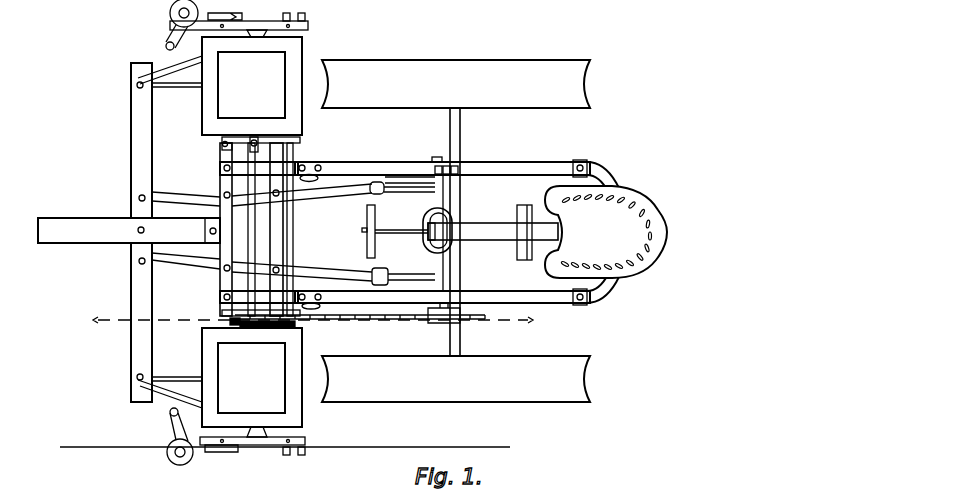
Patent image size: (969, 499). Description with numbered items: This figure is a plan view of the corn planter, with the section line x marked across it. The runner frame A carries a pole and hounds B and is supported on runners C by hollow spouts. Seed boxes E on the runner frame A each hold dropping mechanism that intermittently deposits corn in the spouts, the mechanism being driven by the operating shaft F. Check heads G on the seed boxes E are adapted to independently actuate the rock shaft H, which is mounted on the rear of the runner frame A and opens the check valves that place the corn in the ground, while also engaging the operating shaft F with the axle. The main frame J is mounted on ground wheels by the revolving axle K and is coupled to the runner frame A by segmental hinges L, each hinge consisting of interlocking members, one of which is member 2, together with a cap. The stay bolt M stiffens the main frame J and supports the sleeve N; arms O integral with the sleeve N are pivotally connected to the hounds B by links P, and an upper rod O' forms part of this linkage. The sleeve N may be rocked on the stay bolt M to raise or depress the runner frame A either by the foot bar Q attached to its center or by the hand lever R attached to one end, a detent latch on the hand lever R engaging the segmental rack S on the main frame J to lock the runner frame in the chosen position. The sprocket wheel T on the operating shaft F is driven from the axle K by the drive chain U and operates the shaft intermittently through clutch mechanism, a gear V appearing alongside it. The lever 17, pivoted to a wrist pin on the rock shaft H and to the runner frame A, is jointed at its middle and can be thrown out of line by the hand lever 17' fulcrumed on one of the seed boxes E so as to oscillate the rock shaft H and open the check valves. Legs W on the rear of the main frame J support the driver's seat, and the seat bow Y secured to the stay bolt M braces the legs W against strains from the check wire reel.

The seed boxes E is at (252, 232).
The runners C is at (170, 232).
The check heads G is at (263, 447).
The runner frame A is at (220, 285).
The operating shaft F is at (256, 229).
The rock shaft H is at (290, 229).
The lever 17 is at (217, 150).
The hand lever 17' is at (261, 137).
The segmental hinges L is at (245, 165).
The hand lever R is at (340, 175).
The interlocking member 2 is at (220, 172).
The main frame J is at (503, 172).
The sprocket wheel T is at (230, 320).
The gear V is at (265, 316).
The drive chain U is at (360, 319).
The hounds B is at (262, 232).
The links P is at (370, 190).
The upper connecting rod O' is at (409, 192).
The arms O is at (411, 273).
The foot bar Q is at (385, 233).
The sleeve N is at (430, 262).
The stay bolt M is at (440, 157).
The seat bow Y is at (493, 232).
The revolving axle K is at (461, 133).
The segmental rack S is at (462, 172).
The legs W is at (573, 181).
The section line x is at (311, 321).